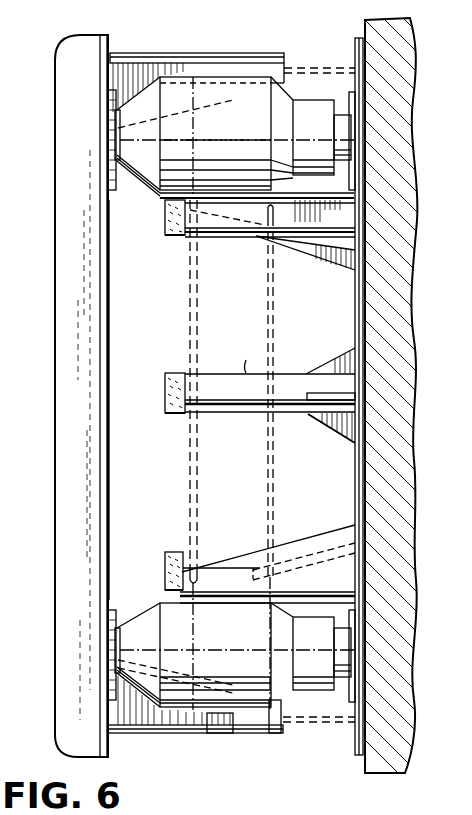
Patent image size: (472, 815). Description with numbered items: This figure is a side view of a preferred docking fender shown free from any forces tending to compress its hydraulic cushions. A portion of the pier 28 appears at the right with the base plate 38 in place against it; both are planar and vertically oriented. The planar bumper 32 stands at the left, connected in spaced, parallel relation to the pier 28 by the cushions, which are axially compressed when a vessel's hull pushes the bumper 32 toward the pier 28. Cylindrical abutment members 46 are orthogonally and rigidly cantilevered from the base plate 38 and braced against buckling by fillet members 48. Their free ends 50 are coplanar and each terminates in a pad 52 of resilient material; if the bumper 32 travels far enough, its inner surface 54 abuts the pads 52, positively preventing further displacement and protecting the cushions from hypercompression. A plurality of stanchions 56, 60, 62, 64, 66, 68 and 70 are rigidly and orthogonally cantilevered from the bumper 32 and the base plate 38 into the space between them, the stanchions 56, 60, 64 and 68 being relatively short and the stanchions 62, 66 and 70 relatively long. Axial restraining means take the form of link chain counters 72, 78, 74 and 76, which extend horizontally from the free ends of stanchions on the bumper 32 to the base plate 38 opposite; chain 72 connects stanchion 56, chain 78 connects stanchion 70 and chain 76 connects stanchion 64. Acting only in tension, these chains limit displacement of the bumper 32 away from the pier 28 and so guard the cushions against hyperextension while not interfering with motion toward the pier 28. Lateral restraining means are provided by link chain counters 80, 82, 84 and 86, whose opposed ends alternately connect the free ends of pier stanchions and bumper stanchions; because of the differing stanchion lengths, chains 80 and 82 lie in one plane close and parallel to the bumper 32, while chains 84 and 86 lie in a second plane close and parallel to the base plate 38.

The pier 28 is at (406, 217).
The bumper 32 is at (55, 434).
The base plate 38 is at (355, 327).
The abutment member 46 is at (254, 230).
The fillet member 48 is at (333, 422).
The free end 50 is at (165, 217).
The pad 52 is at (172, 234).
The inner surface 54 is at (109, 378).
The stanchion 56 is at (133, 62).
The stanchion 60 is at (312, 547).
The stanchion 62 is at (229, 726).
The stanchion 64 is at (136, 722).
The stanchion 66 is at (252, 556).
The stanchion 68 is at (347, 229).
The stanchion 70 is at (237, 56).
The link chain counter 72 is at (319, 46).
The link chain counter 78 is at (330, 66).
The link chain counter 74 is at (319, 739).
The link chain counter 76 is at (298, 722).
The link chain counter 80 is at (165, 391).
The link chain counter 82 is at (190, 306).
The link chain counter 84 is at (302, 391).
The link chain counter 86 is at (270, 314).